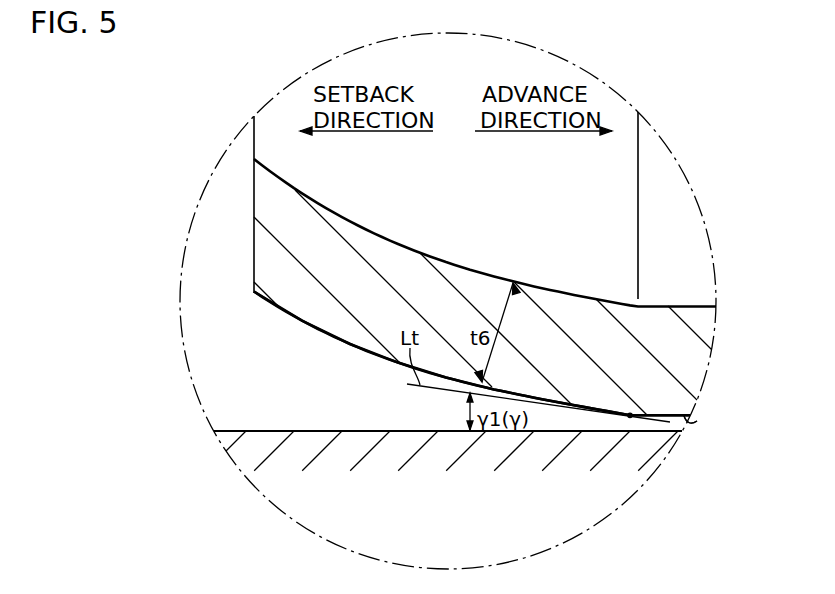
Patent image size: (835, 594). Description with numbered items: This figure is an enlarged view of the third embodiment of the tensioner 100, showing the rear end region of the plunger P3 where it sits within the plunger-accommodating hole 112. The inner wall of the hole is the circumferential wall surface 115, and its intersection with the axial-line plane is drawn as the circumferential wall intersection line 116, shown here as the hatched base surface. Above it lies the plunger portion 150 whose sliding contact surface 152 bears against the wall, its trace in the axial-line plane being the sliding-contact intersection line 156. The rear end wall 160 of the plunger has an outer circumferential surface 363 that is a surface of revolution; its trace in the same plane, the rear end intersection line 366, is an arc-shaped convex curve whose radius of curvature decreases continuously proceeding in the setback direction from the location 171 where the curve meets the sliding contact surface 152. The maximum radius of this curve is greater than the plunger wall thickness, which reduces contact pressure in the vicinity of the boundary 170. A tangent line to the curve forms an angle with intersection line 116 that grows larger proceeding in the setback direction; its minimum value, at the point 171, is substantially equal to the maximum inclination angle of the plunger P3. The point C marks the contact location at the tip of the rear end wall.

The tensioner 100 is at (200, 268).
The plunger-accommodating hole 112 is at (196, 322).
The circumferential wall intersection line 116 is at (397, 431).
The circumferential wall surface 115 is at (448, 482).
The plunger portion 150 is at (684, 333).
The sliding contact surface 152 is at (734, 418).
The sliding-contact intersection line 156 is at (697, 421).
The rear end wall 160 is at (394, 263).
The boundary 170 is at (621, 467).
The location where the curve meets the sliding contact surface 171 is at (629, 419).
The outer circumferential surface 363 is at (437, 354).
The rear end intersection line 366 is at (297, 323).
The plunger P3 is at (228, 183).
The contact point C is at (686, 433).